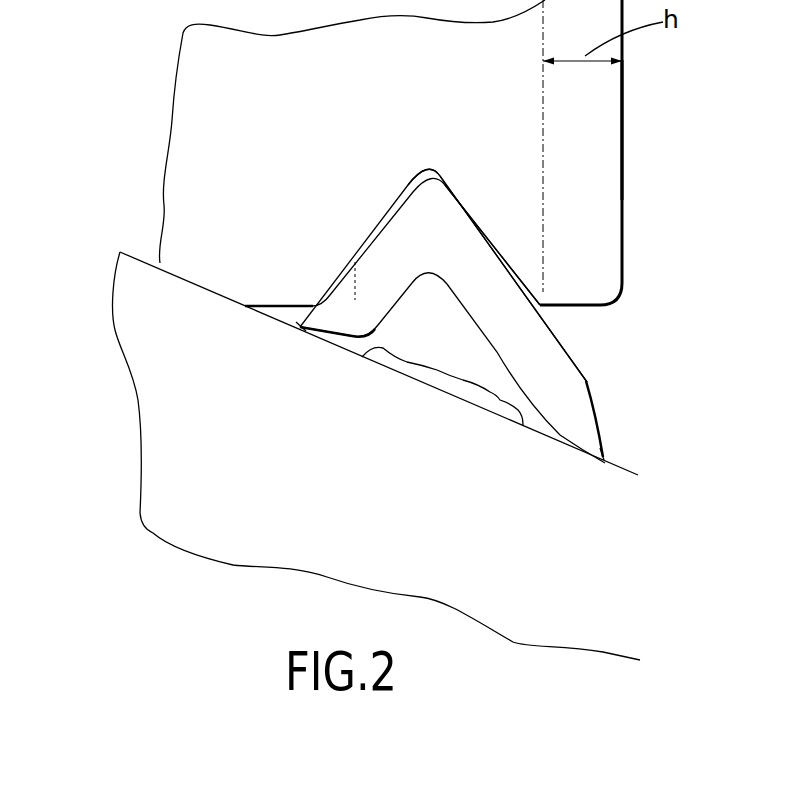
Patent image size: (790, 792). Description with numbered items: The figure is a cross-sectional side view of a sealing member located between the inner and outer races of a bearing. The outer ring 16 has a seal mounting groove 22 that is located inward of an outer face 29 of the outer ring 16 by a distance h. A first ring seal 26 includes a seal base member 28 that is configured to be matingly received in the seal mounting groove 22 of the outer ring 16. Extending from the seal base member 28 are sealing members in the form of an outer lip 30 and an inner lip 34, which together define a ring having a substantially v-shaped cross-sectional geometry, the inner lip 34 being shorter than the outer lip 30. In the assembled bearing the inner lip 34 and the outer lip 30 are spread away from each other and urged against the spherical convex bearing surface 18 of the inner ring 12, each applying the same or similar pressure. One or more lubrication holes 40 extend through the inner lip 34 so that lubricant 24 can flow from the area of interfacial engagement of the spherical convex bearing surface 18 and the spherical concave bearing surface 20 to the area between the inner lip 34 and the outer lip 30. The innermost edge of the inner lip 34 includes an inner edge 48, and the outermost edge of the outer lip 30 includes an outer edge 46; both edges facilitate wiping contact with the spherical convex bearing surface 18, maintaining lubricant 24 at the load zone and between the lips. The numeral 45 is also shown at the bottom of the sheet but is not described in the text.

The inner ring 12 is at (138, 390).
The outer ring 16 is at (620, 288).
The spherical convex bearing surface 18 is at (273, 317).
The spherical concave bearing surface 20 is at (293, 301).
The seal mounting groove 22 is at (491, 223).
The lubricant 24 is at (457, 393).
The first ring seal 26 is at (563, 398).
The seal base member 28 is at (423, 187).
The outer face 29 is at (623, 157).
The outer lip 30 is at (515, 367).
The inner lip 34 is at (360, 328).
The lubrication hole 40 is at (393, 295).
The element 45 is at (370, 787).
The outer edge 46 is at (605, 463).
The inner edge 48 is at (300, 327).